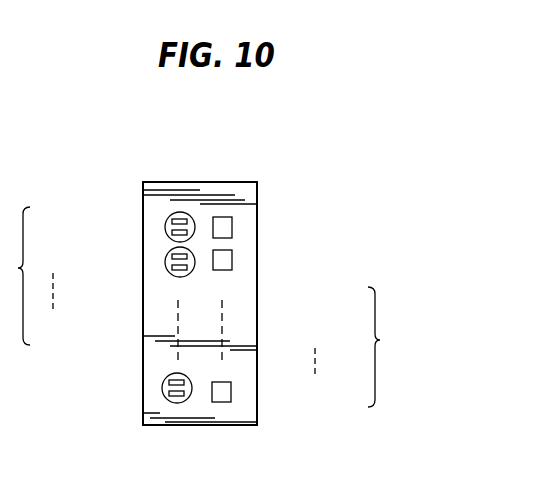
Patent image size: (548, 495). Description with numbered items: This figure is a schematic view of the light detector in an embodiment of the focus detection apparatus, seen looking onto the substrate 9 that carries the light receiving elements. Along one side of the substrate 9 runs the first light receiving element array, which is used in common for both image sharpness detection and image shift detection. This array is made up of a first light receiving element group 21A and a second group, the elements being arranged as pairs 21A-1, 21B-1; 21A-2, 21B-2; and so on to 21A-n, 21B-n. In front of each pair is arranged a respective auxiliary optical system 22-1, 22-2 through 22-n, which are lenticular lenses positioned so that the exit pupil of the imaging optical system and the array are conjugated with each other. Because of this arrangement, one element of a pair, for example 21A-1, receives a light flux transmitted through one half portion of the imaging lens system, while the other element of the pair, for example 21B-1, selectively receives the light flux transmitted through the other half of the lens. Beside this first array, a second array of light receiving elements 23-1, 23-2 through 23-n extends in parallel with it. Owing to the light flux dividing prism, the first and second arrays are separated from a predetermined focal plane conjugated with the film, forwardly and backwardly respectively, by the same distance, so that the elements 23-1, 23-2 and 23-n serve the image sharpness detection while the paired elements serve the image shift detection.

The substrate 9 is at (218, 181).
The auxiliary optical system 22-1 is at (172, 214).
The auxiliary optical system 22-2 is at (173, 277).
The auxiliary optical system 22-n is at (173, 403).
The light receiving element 21B-1 is at (165, 227).
The light receiving element 21B-2 is at (165, 262).
The light receiving element 21B-n is at (165, 383).
The light receiving element 21A-1 is at (193, 261).
The light receiving element 21A-2 is at (195, 272).
The light receiving element 21A-n is at (190, 381).
The first light receiving element group 21A is at (432, 352).
The light receiving element 23-1 is at (233, 226).
The light receiving element 23-2 is at (233, 260).
The light receiving element 23-n is at (225, 402).